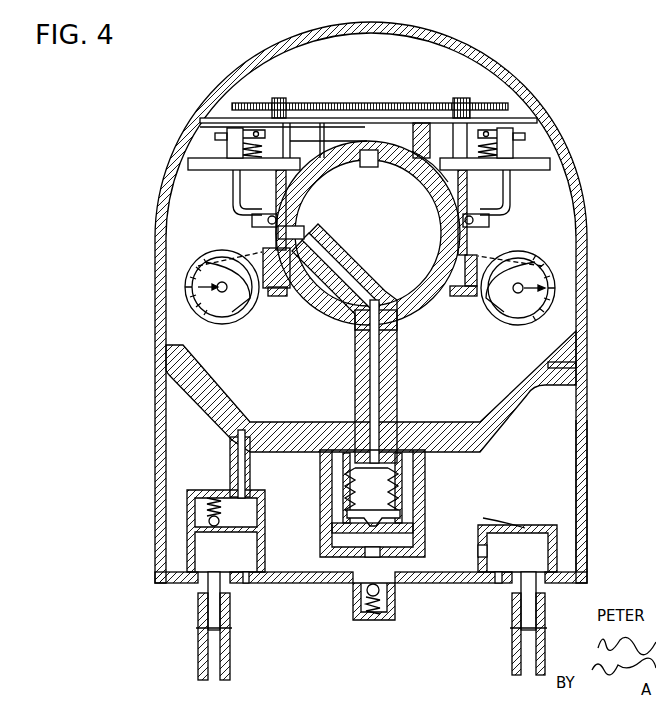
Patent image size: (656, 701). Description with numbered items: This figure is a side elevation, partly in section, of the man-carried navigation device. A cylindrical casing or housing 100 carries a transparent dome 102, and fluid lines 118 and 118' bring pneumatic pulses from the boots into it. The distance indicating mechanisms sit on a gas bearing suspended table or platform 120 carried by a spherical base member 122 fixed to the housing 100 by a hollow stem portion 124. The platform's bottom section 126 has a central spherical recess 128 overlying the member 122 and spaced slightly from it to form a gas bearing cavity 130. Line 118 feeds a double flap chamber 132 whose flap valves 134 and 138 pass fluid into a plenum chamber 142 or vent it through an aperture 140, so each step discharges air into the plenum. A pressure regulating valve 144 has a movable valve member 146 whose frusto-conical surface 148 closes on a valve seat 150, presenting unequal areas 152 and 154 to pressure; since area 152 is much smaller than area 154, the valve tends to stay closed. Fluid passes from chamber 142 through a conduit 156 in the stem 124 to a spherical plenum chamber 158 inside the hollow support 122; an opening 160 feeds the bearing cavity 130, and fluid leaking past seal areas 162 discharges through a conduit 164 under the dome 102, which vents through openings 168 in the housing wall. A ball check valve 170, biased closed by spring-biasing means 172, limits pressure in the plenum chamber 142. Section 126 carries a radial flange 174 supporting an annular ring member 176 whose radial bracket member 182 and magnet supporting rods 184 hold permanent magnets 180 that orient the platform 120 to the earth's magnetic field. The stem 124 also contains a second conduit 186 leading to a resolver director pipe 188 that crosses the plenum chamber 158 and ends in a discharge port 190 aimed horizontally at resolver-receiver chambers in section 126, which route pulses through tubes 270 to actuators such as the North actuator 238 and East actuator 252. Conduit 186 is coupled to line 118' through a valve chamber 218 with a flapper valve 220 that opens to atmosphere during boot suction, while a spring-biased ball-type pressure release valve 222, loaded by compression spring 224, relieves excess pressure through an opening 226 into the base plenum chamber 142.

The cylindrical casing 100 is at (586, 466).
The transparent dome 102 is at (587, 287).
The fluid line 118 is at (547, 623).
The second fluid line 118' is at (234, 626).
The table or platform 120 is at (552, 167).
The spherical base member 122 is at (330, 312).
The hollow stem portion 124 is at (398, 355).
The bottom section of platform 126 is at (467, 200).
The central spherical recess 128 is at (415, 150).
The gas bearing cavity 130 is at (372, 150).
The double flap chamber 132 is at (534, 558).
The flap valve 134 is at (492, 512).
The flap valve 138 is at (482, 555).
The aperture 140 is at (497, 576).
The plenum chamber 142 is at (540, 472).
The pressure regulating valve 144 is at (340, 492).
The movable valve member 146 is at (336, 523).
The tapered frusto-conical surface 148 is at (400, 522).
The valve seat 150 is at (383, 527).
The surface area 152 is at (397, 508).
The surface area 154 is at (395, 495).
The conduit 156 is at (382, 400).
The spherical plenum chamber 158 is at (389, 247).
The opening 160 is at (370, 168).
The seal areas 162 is at (434, 178).
The conduit 164 is at (277, 192).
The opening 168 is at (584, 364).
The ball check valve 170 is at (380, 592).
The spring-biasing means 172 is at (358, 606).
The radial flange 174 is at (460, 297).
The annular ring member 176 is at (478, 262).
The permanent magnets 180 is at (235, 320).
The radial bracket member 182 is at (258, 275).
The magnet supporting rods 184 is at (218, 292).
The second fluid carrying conduit 186 is at (352, 372).
The resolver director pipe 188 is at (345, 258).
The discharge port 190 is at (303, 233).
The valve chamber 218 is at (242, 558).
The flapper valve 220 is at (246, 578).
The pressure release valve 222 is at (206, 505).
The compression spring 224 is at (220, 522).
The opening 226 is at (215, 490).
The North actuator 238 is at (228, 148).
The East actuator 252 is at (514, 150).
The tube 270 is at (232, 188).